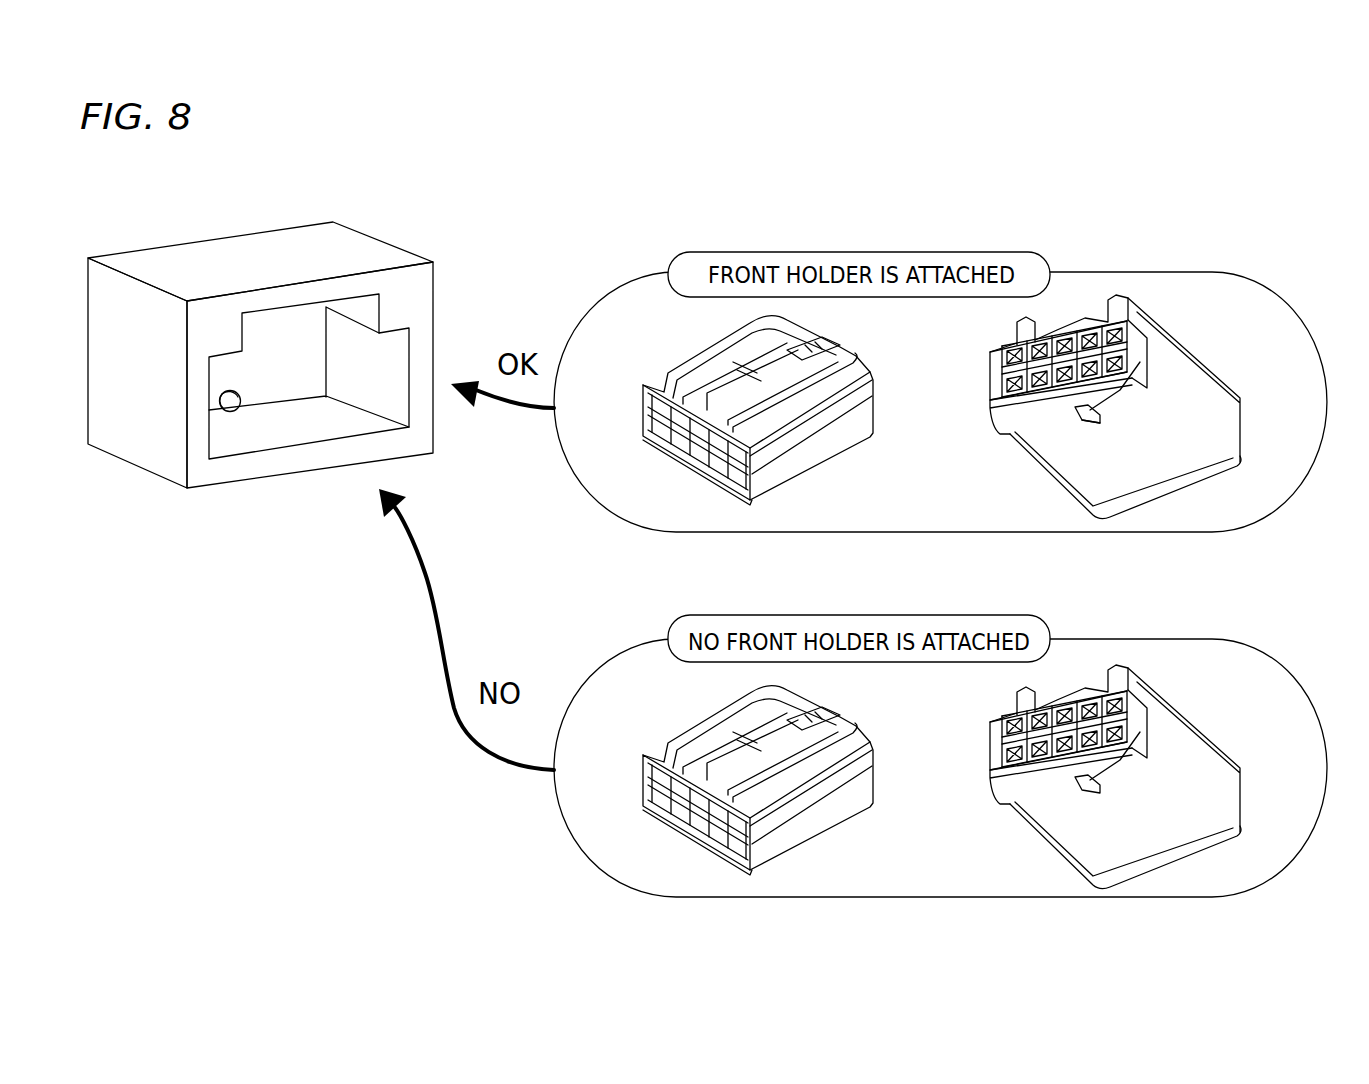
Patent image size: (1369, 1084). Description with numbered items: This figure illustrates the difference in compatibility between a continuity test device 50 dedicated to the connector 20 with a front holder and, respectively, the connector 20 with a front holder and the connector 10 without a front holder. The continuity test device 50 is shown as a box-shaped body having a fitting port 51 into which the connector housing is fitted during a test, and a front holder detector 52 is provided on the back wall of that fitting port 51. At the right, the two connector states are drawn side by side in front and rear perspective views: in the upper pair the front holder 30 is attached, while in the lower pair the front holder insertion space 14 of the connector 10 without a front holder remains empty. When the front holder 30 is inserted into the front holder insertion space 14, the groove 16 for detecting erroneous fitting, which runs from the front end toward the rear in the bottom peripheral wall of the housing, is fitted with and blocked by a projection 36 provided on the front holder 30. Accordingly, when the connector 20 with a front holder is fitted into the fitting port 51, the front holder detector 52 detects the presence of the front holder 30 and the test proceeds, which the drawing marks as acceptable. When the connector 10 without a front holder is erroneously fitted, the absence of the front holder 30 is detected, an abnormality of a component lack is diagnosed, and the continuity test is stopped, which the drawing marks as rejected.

The connector without a front holder 10 is at (916, 772).
The front holder insertion space 14 is at (856, 775).
The groove for detecting erroneous fitting 16 is at (1083, 413).
The connector with a front holder 20 is at (922, 413).
The front holder 30 is at (647, 433).
The projection 36 is at (1080, 408).
The continuity test device 50 is at (260, 359).
The fitting port 51 is at (294, 424).
The front holder detector 52 is at (236, 411).